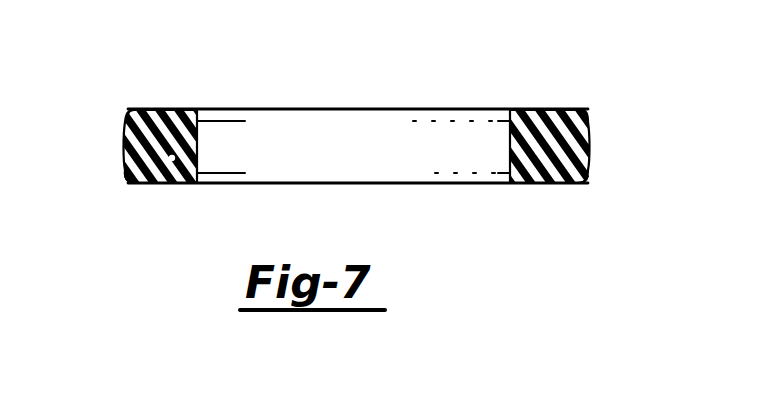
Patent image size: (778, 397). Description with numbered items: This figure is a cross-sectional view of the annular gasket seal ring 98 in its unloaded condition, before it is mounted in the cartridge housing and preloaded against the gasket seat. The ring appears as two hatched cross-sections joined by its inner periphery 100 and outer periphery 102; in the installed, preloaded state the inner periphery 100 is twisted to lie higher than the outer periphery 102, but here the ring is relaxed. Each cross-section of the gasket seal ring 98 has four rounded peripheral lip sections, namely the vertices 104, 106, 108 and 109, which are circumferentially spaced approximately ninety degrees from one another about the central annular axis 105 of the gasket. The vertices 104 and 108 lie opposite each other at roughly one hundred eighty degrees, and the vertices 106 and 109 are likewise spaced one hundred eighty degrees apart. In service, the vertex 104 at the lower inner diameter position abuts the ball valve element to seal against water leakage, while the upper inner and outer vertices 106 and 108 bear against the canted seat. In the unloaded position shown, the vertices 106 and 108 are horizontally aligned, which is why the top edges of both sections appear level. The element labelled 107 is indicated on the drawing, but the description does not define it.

The gasket seal ring 98 is at (163, 98).
The inner periphery 100 is at (198, 156).
The outer periphery 102 is at (127, 143).
The vertex 104 is at (190, 184).
The central annular axis 105 is at (200, 166).
The vertex 106 is at (202, 110).
The bottom surface 107 is at (158, 184).
The vertex 108 is at (130, 111).
The vertex 109 is at (127, 179).